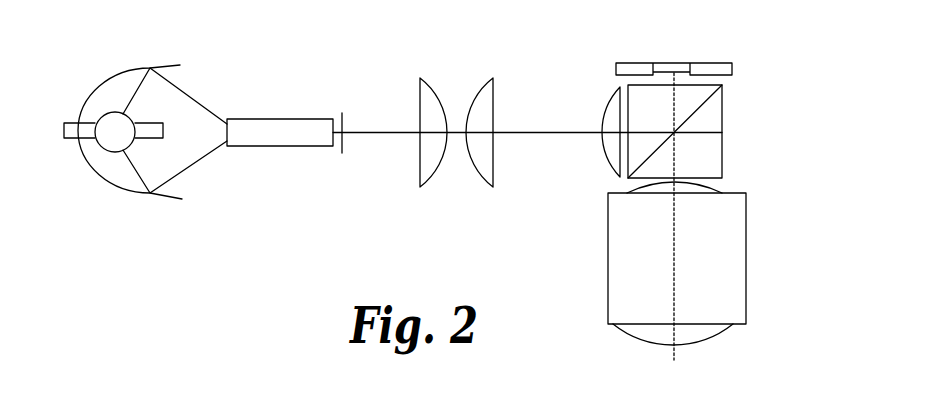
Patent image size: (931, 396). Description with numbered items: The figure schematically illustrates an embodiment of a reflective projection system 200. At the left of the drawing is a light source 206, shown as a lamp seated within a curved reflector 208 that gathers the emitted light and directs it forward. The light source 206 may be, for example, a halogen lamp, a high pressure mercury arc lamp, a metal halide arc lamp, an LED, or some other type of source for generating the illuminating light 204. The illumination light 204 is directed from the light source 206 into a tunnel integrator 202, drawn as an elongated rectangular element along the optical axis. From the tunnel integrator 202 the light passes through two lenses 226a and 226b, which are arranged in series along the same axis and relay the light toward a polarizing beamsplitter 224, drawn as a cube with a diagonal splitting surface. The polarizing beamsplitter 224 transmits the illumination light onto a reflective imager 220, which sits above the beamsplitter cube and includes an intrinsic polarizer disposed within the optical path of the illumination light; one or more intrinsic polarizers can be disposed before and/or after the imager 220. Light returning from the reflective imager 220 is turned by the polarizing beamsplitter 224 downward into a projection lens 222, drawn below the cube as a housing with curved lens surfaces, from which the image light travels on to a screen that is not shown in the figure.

The reflective projection system 200 is at (768, 70).
The tunnel integrator 202 is at (273, 118).
The illumination light 204 is at (193, 170).
The light source 206 is at (108, 122).
The reflector 208 is at (105, 178).
The reflective imager 220 is at (705, 62).
The projection lens 222 is at (746, 270).
The polarizing beamsplitter 224 is at (722, 133).
The lens 226a is at (487, 79).
The lens 226b is at (617, 92).